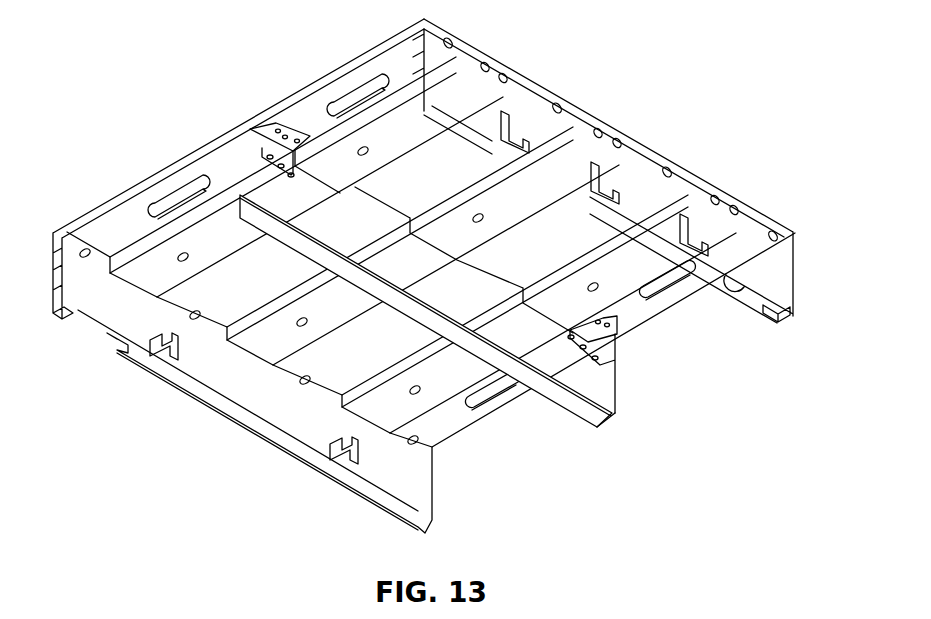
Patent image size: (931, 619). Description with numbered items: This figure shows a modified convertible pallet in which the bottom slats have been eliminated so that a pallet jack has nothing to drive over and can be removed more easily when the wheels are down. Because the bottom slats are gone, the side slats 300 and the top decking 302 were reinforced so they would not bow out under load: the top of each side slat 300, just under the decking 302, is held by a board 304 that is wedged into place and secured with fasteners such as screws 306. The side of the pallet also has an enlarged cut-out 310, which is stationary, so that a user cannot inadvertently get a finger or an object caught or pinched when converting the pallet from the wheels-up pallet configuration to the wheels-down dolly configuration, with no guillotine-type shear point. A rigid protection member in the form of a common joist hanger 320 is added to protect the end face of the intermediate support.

The side slat 300 is at (776, 274).
The top decking 302 is at (296, 92).
The board 304 is at (398, 128).
The screws 306 is at (495, 65).
The enlarged cut-out 310 is at (603, 195).
The joist hanger 320 is at (240, 143).